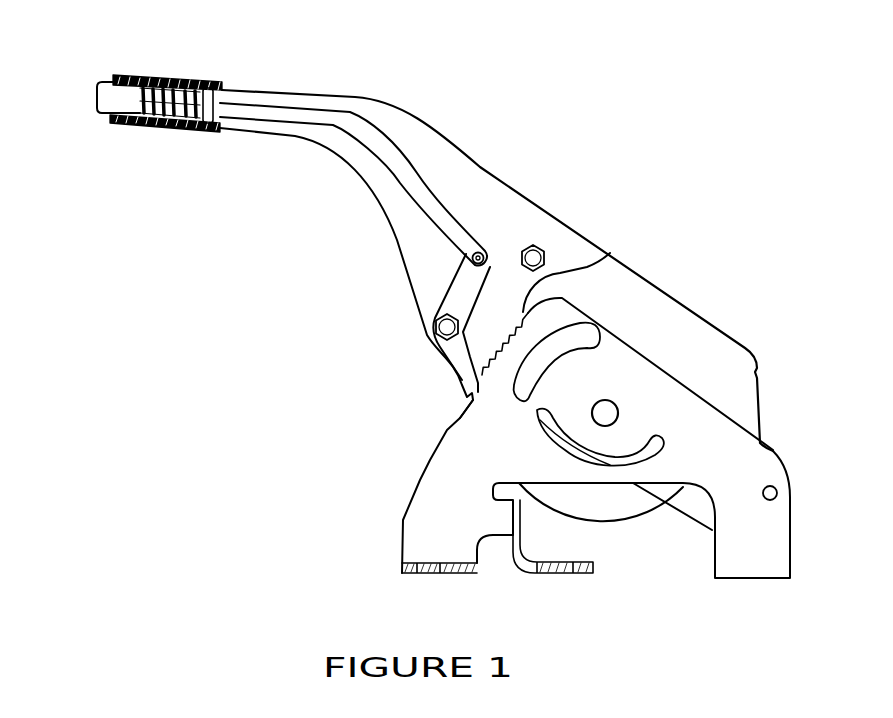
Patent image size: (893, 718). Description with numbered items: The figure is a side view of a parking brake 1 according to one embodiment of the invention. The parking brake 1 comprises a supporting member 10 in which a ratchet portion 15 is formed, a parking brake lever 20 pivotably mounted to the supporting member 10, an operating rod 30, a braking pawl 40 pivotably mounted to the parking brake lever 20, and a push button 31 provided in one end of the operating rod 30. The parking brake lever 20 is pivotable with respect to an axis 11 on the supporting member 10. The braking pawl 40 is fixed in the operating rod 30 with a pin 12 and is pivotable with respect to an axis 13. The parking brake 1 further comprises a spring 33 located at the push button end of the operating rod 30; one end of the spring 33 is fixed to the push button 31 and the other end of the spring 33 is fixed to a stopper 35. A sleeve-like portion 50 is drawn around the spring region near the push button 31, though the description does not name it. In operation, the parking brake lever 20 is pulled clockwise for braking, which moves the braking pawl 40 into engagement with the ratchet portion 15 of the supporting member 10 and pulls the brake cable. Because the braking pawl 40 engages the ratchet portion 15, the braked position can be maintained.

The parking brake 1 is at (736, 245).
The supporting member 10 is at (778, 446).
The axis 11 is at (605, 400).
The pin 12 is at (472, 257).
The axis 13 is at (437, 326).
The ratchet portion 15 is at (610, 254).
The parking brake lever 20 is at (507, 185).
The operating rod 30 is at (298, 110).
The push button 31 is at (97, 89).
The spring 33 is at (152, 127).
The stopper 35 is at (210, 131).
The braking pawl 40 is at (450, 372).
The sleeve 50 is at (163, 78).